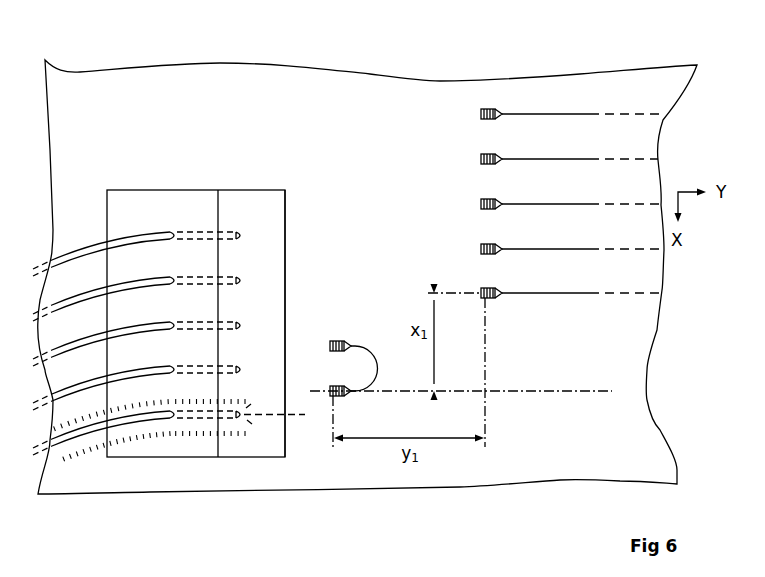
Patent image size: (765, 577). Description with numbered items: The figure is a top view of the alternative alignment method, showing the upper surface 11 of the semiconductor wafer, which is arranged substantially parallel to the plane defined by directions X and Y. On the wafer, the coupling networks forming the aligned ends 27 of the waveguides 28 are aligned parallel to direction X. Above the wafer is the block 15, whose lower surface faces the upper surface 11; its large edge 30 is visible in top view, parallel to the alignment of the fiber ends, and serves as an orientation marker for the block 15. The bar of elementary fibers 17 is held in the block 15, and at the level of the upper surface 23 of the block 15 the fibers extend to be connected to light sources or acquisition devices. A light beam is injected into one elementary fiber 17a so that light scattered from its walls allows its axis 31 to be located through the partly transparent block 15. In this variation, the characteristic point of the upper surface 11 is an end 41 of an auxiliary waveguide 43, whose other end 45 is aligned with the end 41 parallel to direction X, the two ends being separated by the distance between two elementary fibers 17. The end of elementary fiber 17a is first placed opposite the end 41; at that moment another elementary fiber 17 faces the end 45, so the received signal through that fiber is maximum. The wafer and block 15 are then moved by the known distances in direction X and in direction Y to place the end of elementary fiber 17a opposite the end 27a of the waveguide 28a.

The upper surface of semiconductor wafer 11 is at (248, 70).
The block 15 is at (256, 190).
The elementary fibers 17 is at (195, 232).
The elementary fiber 17a is at (198, 420).
The upper surface of block 23 is at (158, 197).
The ends of waveguides 27 is at (483, 113).
The end of waveguide 27a is at (488, 289).
The waveguides 28 is at (553, 114).
The waveguide 28a is at (557, 293).
The large edge of lower surface 30 is at (287, 262).
The axis of elementary fiber 31 is at (297, 418).
The end of auxiliary waveguide 41 is at (333, 386).
The auxiliary waveguide 43 is at (362, 346).
The other end of waveguide 45 is at (331, 341).